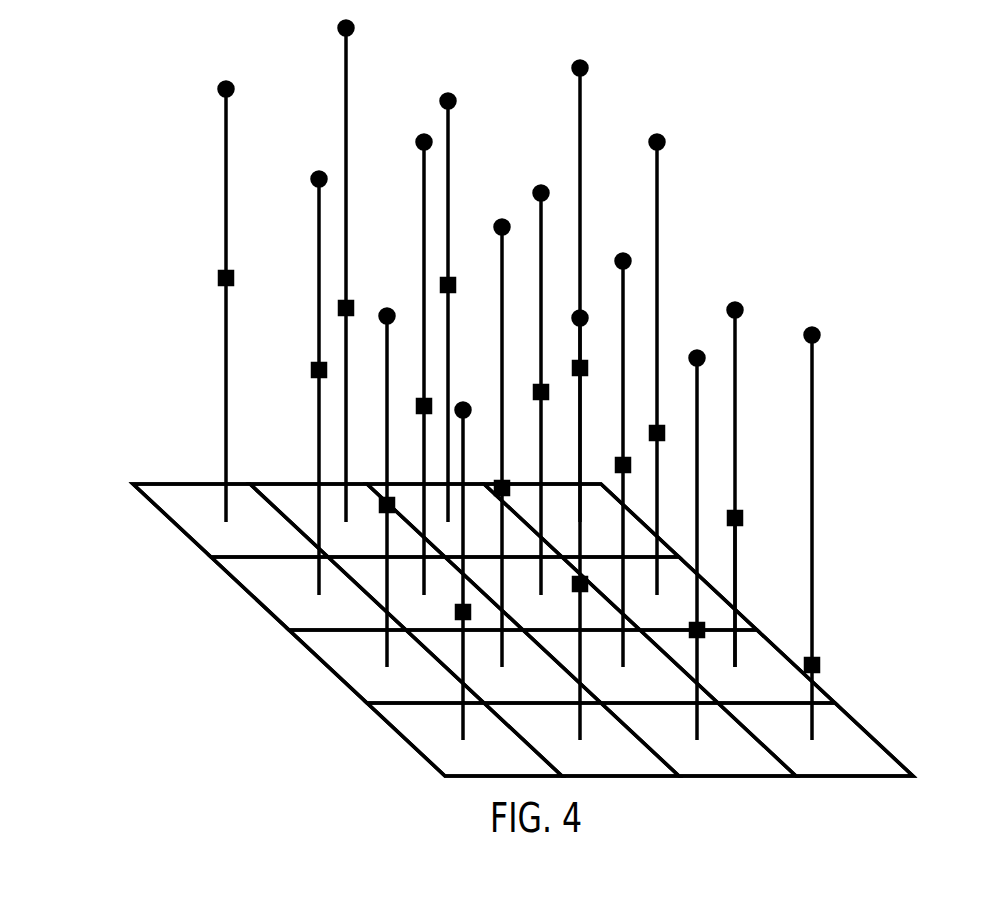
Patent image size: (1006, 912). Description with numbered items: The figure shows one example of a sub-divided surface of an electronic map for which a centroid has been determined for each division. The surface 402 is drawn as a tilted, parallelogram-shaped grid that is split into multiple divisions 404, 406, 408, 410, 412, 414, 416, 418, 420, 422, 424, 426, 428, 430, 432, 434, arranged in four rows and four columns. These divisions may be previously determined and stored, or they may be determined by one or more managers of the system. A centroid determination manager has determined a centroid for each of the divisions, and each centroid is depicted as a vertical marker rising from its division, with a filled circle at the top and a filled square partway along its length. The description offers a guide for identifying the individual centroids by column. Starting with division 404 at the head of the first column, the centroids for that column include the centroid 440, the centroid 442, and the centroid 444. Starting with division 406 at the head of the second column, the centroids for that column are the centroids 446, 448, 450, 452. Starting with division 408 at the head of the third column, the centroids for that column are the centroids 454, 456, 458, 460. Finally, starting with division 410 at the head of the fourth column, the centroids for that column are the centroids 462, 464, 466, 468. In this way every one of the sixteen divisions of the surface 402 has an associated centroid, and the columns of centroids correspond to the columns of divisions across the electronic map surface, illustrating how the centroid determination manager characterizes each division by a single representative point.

The surface 402 is at (110, 484).
The division 404 is at (253, 552).
The division 406 is at (371, 552).
The division 408 is at (486, 552).
The division 410 is at (604, 552).
The division 412 is at (332, 624).
The division 414 is at (413, 624).
The division 416 is at (565, 624).
The division 418 is at (682, 624).
The division 420 is at (407, 696).
The division 422 is at (523, 696).
The division 424 is at (640, 696).
The division 426 is at (755, 696).
The division 428 is at (481, 769).
The division 430 is at (598, 769).
The division 432 is at (714, 769).
The division 434 is at (830, 769).
The centroid 440 is at (319, 272).
The centroid 442 is at (387, 440).
The centroid 444 is at (463, 658).
The centroid 446 is at (346, 113).
The centroid 448 is at (226, 188).
The centroid 450 is at (502, 287).
The centroid 452 is at (577, 723).
The centroid 454 is at (448, 168).
The centroid 456 is at (542, 257).
The centroid 458 is at (623, 309).
The centroid 460 is at (735, 578).
The centroid 462 is at (580, 192).
The centroid 464 is at (657, 225).
The centroid 466 is at (735, 435).
The centroid 468 is at (812, 483).